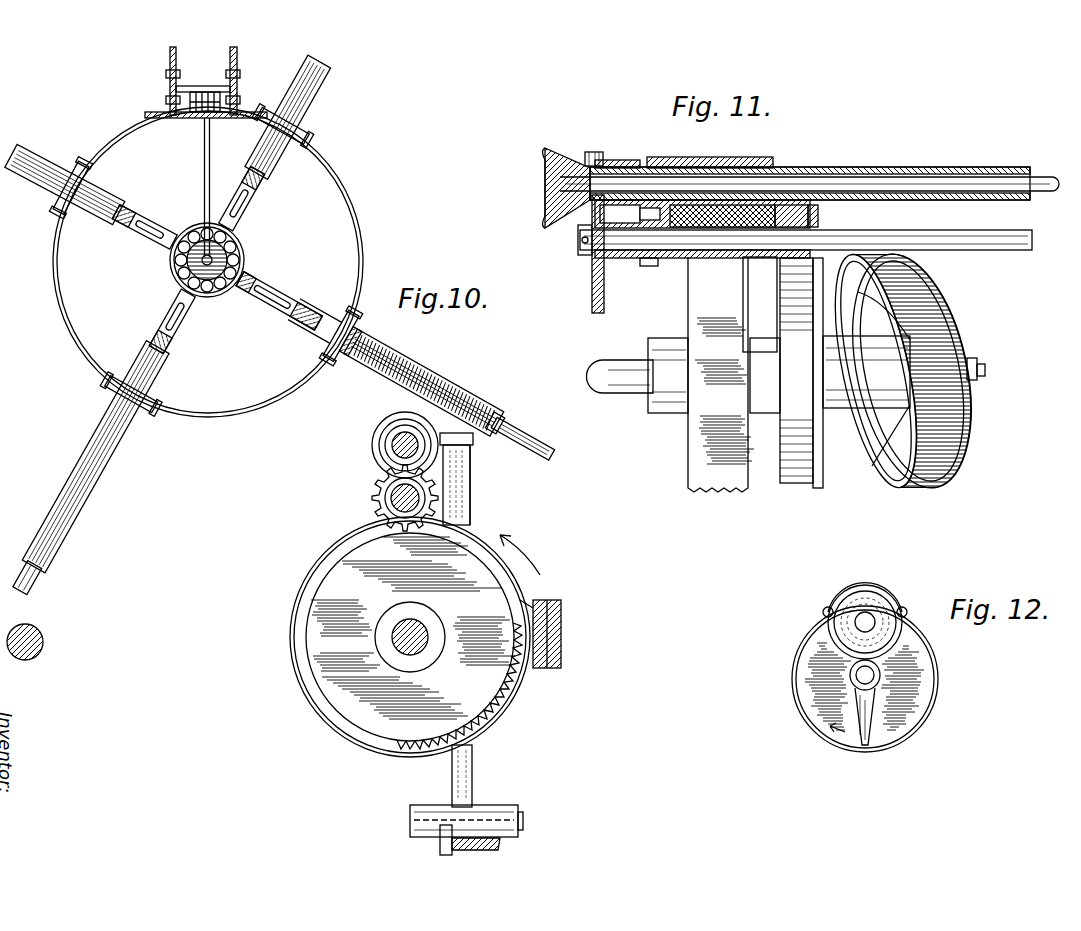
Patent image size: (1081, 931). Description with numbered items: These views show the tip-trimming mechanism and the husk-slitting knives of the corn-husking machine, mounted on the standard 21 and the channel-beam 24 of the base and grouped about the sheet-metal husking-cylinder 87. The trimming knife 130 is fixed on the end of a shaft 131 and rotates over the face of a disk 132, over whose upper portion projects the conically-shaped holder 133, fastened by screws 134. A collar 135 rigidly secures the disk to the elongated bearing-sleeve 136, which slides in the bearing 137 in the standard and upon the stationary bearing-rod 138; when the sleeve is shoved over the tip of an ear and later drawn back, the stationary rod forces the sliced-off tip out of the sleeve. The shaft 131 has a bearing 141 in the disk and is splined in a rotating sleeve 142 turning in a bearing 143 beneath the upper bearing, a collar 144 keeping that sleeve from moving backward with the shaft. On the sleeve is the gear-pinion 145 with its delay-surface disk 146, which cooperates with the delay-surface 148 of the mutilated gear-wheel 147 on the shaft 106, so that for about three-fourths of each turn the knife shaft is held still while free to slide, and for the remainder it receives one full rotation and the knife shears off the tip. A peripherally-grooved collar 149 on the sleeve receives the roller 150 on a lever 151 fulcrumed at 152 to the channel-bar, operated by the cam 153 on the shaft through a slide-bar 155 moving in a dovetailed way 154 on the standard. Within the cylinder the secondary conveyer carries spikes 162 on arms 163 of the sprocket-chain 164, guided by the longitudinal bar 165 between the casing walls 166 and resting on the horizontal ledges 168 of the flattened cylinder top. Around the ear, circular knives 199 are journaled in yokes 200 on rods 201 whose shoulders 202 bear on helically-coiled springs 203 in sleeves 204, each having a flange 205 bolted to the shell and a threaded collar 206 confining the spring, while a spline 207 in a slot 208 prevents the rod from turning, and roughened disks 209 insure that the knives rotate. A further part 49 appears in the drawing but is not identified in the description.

In FIG. 11, the standard 21 is at (721, 374).
In FIG. 10, the channel-beam 24 is at (505, 840).
In FIG. 10, the shaft 49 is at (44, 646).
In FIG. 10, the husking-cylinder 87 is at (366, 232).
In FIG. 10, the shaft 106 is at (418, 648).
In FIG. 11, the shaft 106 is at (632, 380).
In FIG. 11, the knife 130 is at (592, 278).
In FIG. 12, the knife 130 is at (866, 738).
In FIG. 10, the shaft 131 is at (390, 506).
In FIG. 11, the shaft 131 is at (955, 230).
In FIG. 12, the shaft 131 is at (856, 675).
In FIG. 11, the disk 132 is at (598, 314).
In FIG. 12, the disk 132 is at (912, 712).
In FIG. 11, the conically-shaped holder 133 is at (562, 150).
In FIG. 12, the conically-shaped holder 133 is at (830, 615).
In FIG. 11, the screws 134 is at (603, 152).
In FIG. 12, the screws 134 is at (865, 586).
In FIG. 11, the collar 135 is at (632, 160).
In FIG. 10, the elongated bearing-sleeve 136 is at (392, 436).
In FIG. 11, the elongated bearing-sleeve 136 is at (836, 166).
In FIG. 11, the bearing 137 is at (738, 157).
In FIG. 10, the stationary bearing-rod 138 is at (392, 452).
In FIG. 11, the stationary bearing-rod 138 is at (892, 180).
In FIG. 12, the stationary bearing-rod 138 is at (876, 622).
In FIG. 11, the bearing 141 is at (628, 245).
In FIG. 11, the rotating sleeve 142 is at (676, 258).
In FIG. 11, the bearing 143 is at (762, 268).
In FIG. 11, the collar 144 is at (656, 262).
In FIG. 10, the gear-pinion 145 is at (382, 494).
In FIG. 11, the gear-pinion 145 is at (790, 205).
In FIG. 10, the delay-surface disk 146 is at (470, 498).
In FIG. 11, the delay-surface disk 146 is at (820, 212).
In FIG. 10, the mutilated gear-wheel 147 is at (410, 637).
In FIG. 11, the mutilated gear-wheel 147 is at (797, 370).
In FIG. 10, the delay-surface 148 is at (517, 604).
In FIG. 11, the delay-surface 148 is at (826, 480).
In FIG. 10, the peripherally-grooved collar 149 is at (378, 448).
In FIG. 10, the antifriction-roller 150 is at (446, 430).
In FIG. 10, the lever 151 is at (470, 486).
In FIG. 10, the fulcrum 152 is at (425, 806).
In FIG. 10, the cam 153 is at (526, 690).
In FIG. 11, the cam 153 is at (962, 446).
In FIG. 10, the dovetailed way 154 is at (561, 630).
In FIG. 10, the slide-bar 155 is at (562, 636).
In FIG. 10, the spikes 162 is at (197, 240).
In FIG. 10, the arms 163 is at (210, 160).
In FIG. 10, the sprocket-chain 164 is at (222, 98).
In FIG. 10, the longitudinal bar 165 is at (205, 78).
In FIG. 10, the walls 166 is at (228, 52).
In FIG. 10, the horizontal ledges 168 is at (200, 118).
In FIG. 10, the circular knives 199 is at (248, 272).
In FIG. 10, the yokes 200 is at (280, 296).
In FIG. 10, the rods 201 is at (292, 302).
In FIG. 10, the shoulders 202 is at (382, 340).
In FIG. 10, the helically-coiled expansible springs 203 is at (432, 366).
In FIG. 10, the sleeve 204 is at (140, 185).
In FIG. 10, the flange 205 is at (368, 314).
In FIG. 10, the threaded collar 206 is at (522, 414).
In FIG. 10, the spline 207 is at (330, 312).
In FIG. 10, the slot 208 is at (318, 298).
In FIG. 10, the disks 209 is at (248, 248).